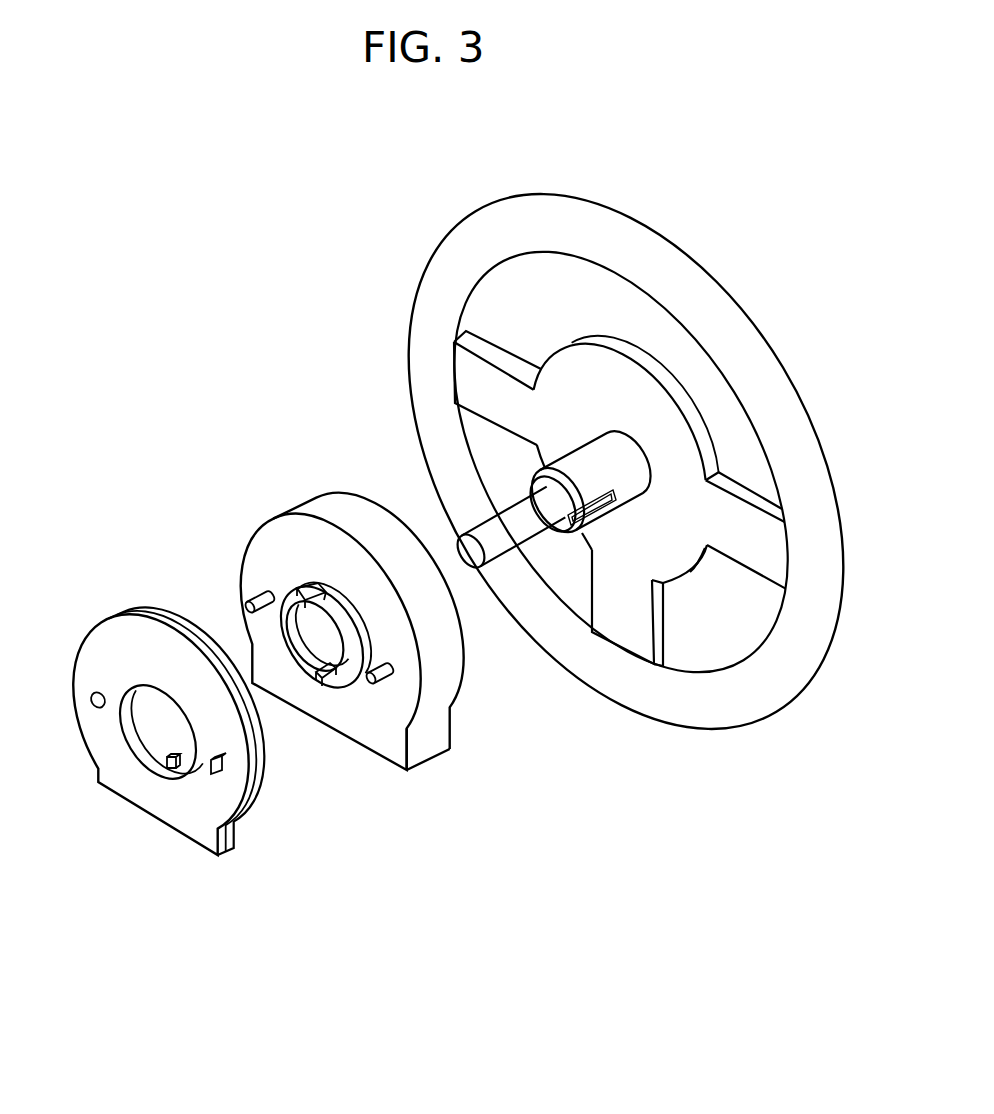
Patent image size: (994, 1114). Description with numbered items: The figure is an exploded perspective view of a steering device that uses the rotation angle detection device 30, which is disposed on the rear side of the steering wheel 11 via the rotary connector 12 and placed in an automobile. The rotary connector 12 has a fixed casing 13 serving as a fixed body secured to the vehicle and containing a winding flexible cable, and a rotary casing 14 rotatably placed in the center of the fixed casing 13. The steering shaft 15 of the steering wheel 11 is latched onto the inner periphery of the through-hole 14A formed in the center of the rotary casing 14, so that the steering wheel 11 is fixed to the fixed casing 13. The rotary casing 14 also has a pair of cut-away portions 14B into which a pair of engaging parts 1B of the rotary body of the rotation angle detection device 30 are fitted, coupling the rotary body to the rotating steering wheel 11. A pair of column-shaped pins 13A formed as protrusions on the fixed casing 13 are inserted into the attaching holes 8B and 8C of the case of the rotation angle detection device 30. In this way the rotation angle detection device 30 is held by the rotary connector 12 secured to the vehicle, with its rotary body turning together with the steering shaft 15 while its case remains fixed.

The steering wheel 11 is at (440, 298).
The steering shaft 15 is at (532, 478).
The fixed casing 13 is at (440, 660).
The rotary connector 12 is at (438, 763).
The rotary casing 14 is at (308, 582).
The through-hole 14A is at (310, 625).
The cut-away portions 14B is at (318, 585).
The column-shaped pins 13A is at (250, 598).
The rotation angle detection device 30 is at (237, 853).
The attaching hole 8B is at (95, 707).
The engaging parts 1B is at (170, 767).
The attaching hole 8C is at (215, 770).